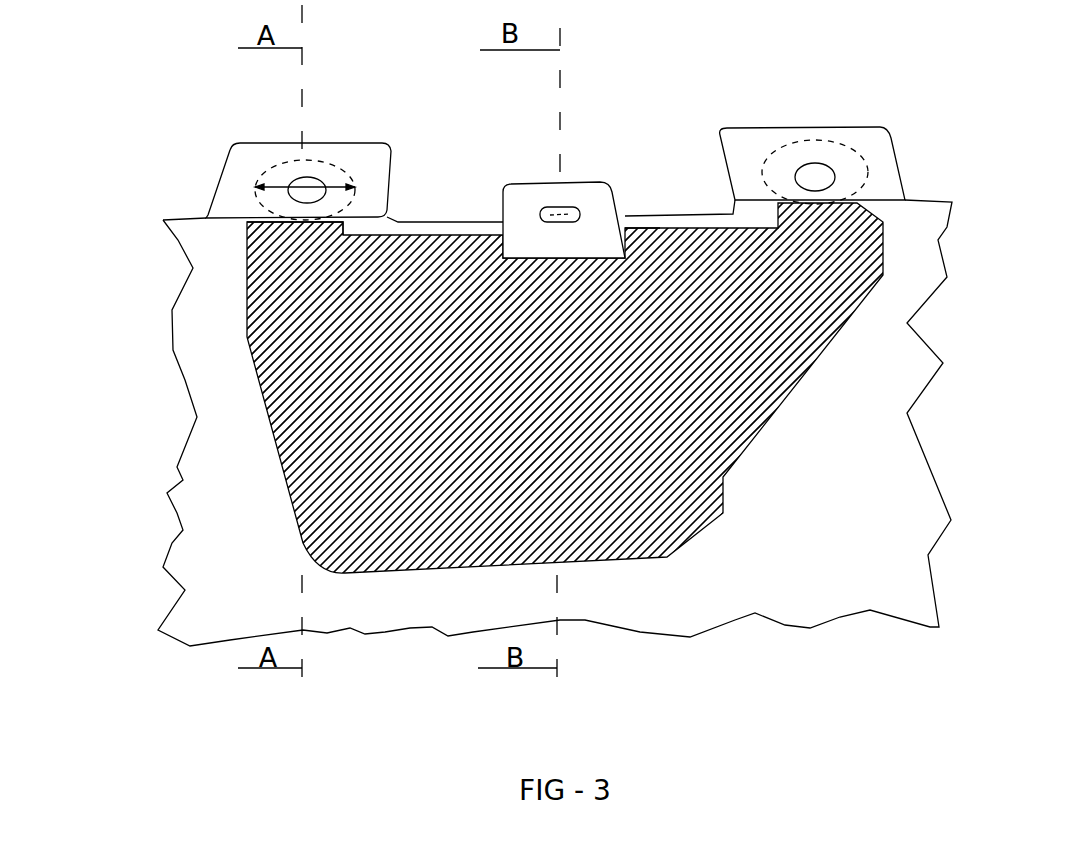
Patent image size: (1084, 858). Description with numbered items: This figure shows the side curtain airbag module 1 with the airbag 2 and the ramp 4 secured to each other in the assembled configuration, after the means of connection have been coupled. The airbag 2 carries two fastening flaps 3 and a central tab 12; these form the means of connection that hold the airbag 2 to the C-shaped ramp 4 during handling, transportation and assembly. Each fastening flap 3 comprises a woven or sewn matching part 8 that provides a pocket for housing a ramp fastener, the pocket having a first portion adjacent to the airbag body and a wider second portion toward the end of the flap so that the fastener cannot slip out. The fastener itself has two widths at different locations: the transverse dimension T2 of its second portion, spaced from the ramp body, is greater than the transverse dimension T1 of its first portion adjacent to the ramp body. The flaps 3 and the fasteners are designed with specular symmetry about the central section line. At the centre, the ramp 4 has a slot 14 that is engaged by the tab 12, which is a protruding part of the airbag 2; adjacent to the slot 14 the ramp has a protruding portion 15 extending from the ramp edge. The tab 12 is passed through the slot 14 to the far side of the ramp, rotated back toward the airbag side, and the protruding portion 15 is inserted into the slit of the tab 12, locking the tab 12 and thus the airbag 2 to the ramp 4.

The side curtain airbag module 1 is at (143, 478).
The airbag 2 is at (810, 597).
The fastening flap 3 is at (862, 138).
The ramp 4 is at (383, 558).
The matching part 8 is at (870, 162).
The tab 12 is at (517, 202).
The slot 14 is at (650, 230).
The protruding portion 15 is at (578, 214).
The transverse dimension of first portion T1 is at (300, 223).
The transverse dimension of second portion T2 is at (272, 190).